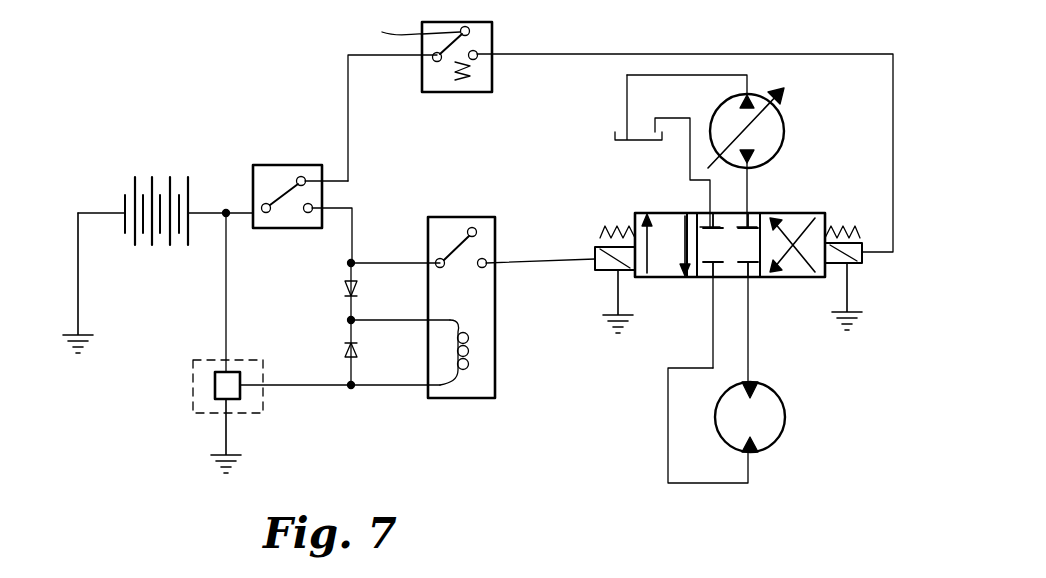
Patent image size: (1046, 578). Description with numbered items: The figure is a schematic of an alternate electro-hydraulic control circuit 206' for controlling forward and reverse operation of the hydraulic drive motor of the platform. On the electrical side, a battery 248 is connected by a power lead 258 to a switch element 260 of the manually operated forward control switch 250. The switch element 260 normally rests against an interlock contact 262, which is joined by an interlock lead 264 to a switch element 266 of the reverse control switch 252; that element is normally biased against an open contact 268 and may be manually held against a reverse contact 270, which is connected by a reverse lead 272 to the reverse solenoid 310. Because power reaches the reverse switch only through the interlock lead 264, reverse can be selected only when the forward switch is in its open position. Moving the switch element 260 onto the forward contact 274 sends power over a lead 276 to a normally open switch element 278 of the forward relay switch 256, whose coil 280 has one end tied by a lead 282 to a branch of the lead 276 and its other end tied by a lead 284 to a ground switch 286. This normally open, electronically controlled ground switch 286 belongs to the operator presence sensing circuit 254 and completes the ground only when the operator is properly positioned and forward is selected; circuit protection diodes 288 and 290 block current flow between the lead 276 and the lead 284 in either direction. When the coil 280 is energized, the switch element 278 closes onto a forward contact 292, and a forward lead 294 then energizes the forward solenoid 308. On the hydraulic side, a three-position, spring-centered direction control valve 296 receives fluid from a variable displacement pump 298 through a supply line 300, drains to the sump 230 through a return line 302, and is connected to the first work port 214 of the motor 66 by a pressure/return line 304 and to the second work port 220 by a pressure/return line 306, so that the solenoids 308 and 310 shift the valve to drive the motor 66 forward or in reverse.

The electro-hydraulic control circuit 206' is at (134, 99).
The battery 248 is at (123, 200).
The forward control switch 250 is at (272, 165).
The reverse control switch 252 is at (431, 92).
The operator presence sensing circuit 254 is at (193, 378).
The forward relay switch 256 is at (436, 398).
The power lead 258 is at (226, 274).
The switch element 260 is at (260, 192).
The interlock contact 262 is at (299, 176).
The interlock lead 264 is at (346, 58).
The switch element 266 is at (390, 28).
The open contact 268 is at (470, 27).
The reverse contact 270 is at (477, 58).
The reverse lead 272 is at (608, 54).
The forward contact 274 is at (322, 198).
The lead 276 is at (395, 263).
The switch element 278 is at (462, 228).
The coil 280 is at (476, 383).
The lead 282 is at (396, 320).
The lead 284 is at (288, 386).
The ground switch 286 is at (220, 372).
The circuit protection diode 288 is at (346, 350).
The circuit protection diode 290 is at (345, 283).
The forward contact 292 is at (490, 256).
The forward lead 294 is at (520, 262).
The direction control valve 296 is at (795, 213).
The variable displacement pump 298 is at (770, 68).
The supply line 300 is at (758, 170).
The return line 302 is at (706, 193).
The pressure/return line 304 is at (748, 333).
The pressure/return line 306 is at (668, 417).
The forward solenoid 308 is at (600, 245).
The reverse solenoid 310 is at (855, 265).
The sump 230 is at (615, 140).
The first work port 214 is at (752, 382).
The fixed displacement motor 66 is at (786, 418).
The second work port 220 is at (754, 452).